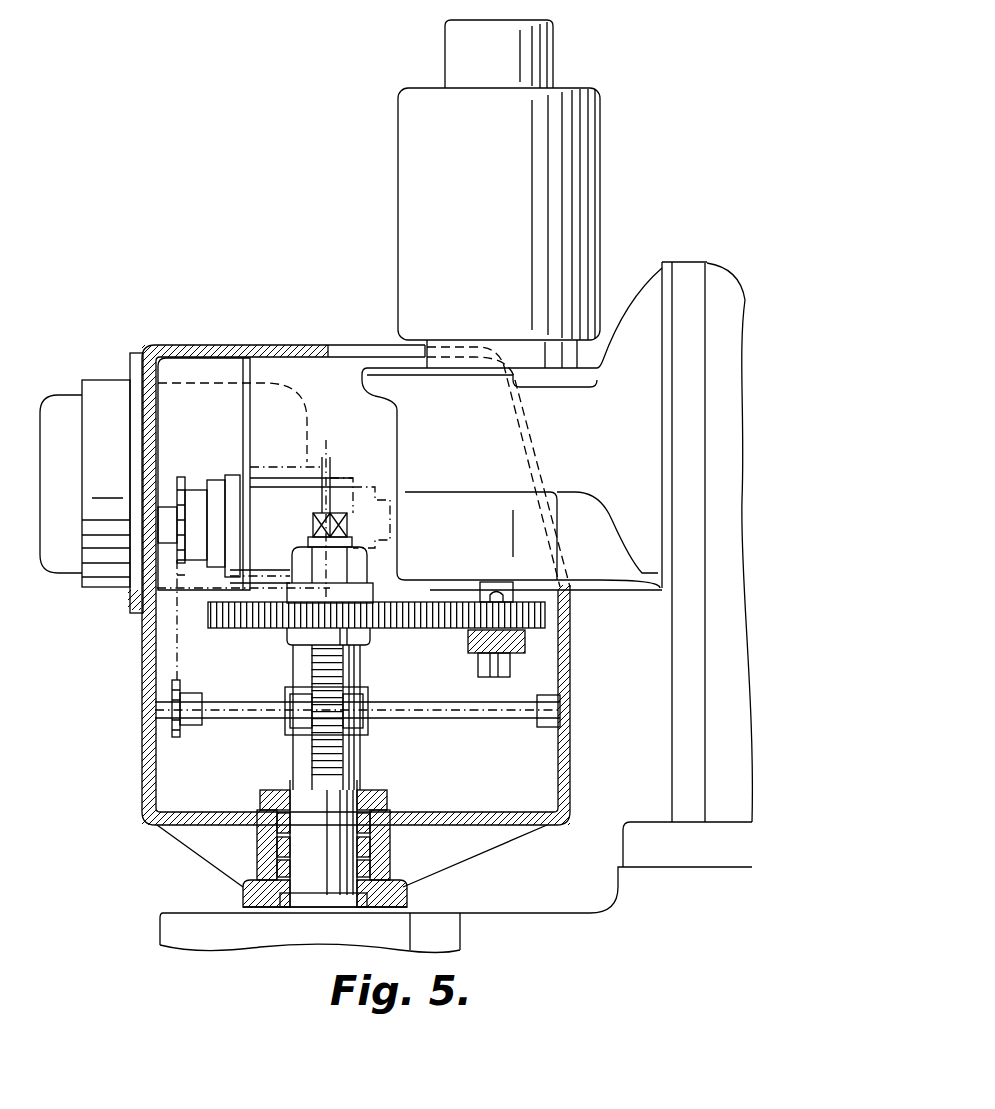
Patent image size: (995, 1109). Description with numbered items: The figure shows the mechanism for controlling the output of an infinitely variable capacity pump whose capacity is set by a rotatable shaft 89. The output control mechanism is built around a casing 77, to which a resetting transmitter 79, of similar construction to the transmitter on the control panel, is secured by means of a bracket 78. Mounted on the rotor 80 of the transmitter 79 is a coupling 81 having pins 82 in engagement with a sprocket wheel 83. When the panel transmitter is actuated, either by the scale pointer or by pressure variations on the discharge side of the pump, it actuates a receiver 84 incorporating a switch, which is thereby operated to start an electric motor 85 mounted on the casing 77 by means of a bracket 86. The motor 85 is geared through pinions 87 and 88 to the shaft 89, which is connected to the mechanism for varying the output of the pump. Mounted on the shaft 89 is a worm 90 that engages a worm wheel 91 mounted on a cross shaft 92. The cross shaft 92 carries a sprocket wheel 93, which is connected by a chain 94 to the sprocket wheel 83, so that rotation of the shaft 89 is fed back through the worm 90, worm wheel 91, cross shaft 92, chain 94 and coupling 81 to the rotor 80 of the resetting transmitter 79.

The casing 77 is at (303, 345).
The bracket 78 is at (337, 493).
The resetting transmitter 79 is at (360, 500).
The rotor 80 is at (183, 565).
The coupling 81 is at (222, 493).
The pins 82 is at (197, 497).
The sprocket wheel 83 is at (177, 480).
The receiver 84 is at (120, 412).
The electric motor 85 is at (505, 160).
The bracket 86 is at (650, 282).
The pinion 87 is at (488, 622).
The pinion 88 is at (408, 628).
The shaft 89 is at (323, 842).
The worm 90 is at (365, 732).
The worm wheel 91 is at (310, 738).
The cross shaft 92 is at (453, 712).
The sprocket wheel 93 is at (177, 732).
The chain 94 is at (170, 620).